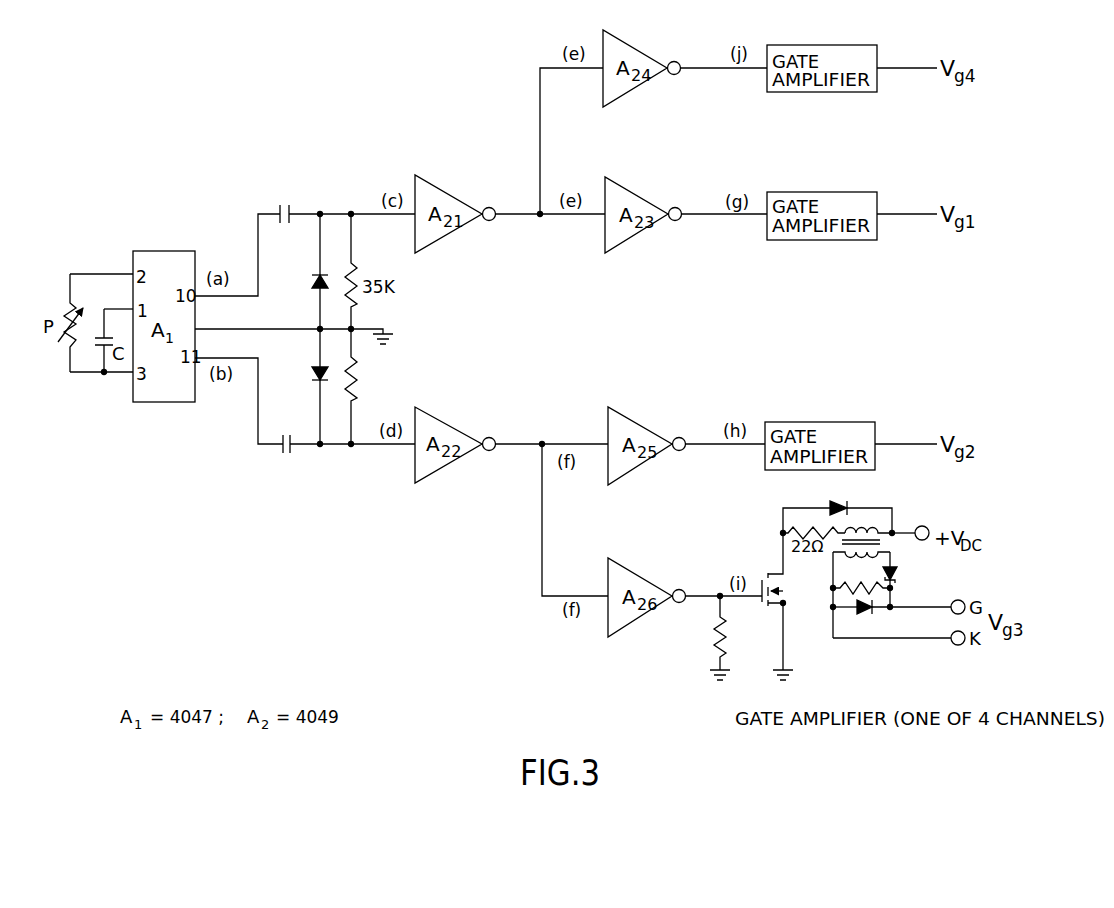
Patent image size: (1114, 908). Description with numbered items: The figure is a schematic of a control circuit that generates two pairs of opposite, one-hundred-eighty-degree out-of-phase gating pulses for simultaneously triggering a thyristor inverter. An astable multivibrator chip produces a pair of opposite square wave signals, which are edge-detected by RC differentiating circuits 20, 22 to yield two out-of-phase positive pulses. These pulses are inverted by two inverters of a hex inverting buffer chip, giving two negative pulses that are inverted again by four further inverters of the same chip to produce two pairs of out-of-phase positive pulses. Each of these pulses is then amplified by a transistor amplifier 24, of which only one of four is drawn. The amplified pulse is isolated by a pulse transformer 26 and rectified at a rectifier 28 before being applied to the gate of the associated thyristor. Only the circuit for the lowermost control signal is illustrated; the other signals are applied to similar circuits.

The RC differentiating circuit 20 is at (312, 207).
The RC differentiating circuit 22 is at (317, 452).
The transistor amplifier 24 is at (789, 587).
The pulse transformer 26 is at (904, 553).
The rectifier 28 is at (904, 588).